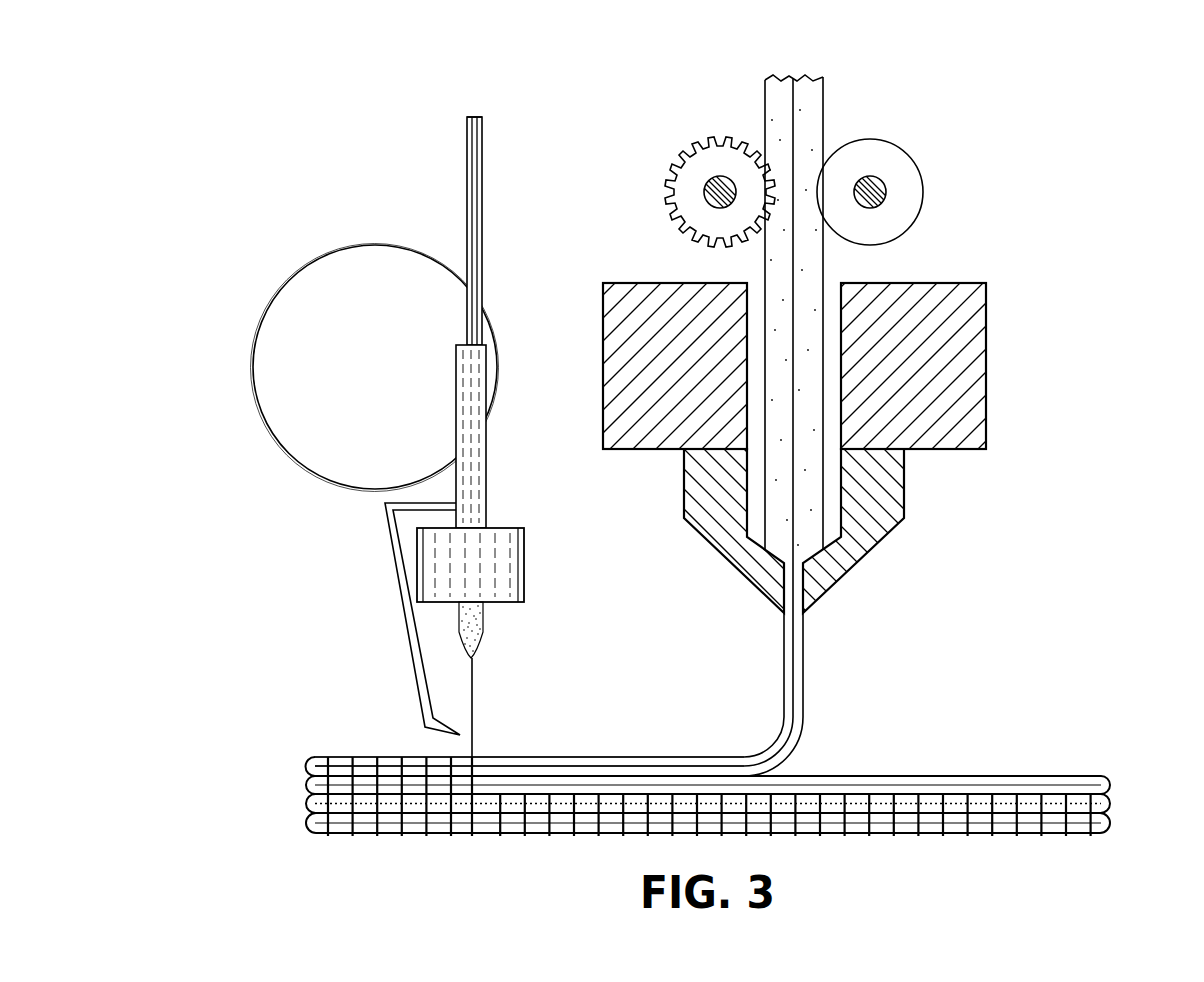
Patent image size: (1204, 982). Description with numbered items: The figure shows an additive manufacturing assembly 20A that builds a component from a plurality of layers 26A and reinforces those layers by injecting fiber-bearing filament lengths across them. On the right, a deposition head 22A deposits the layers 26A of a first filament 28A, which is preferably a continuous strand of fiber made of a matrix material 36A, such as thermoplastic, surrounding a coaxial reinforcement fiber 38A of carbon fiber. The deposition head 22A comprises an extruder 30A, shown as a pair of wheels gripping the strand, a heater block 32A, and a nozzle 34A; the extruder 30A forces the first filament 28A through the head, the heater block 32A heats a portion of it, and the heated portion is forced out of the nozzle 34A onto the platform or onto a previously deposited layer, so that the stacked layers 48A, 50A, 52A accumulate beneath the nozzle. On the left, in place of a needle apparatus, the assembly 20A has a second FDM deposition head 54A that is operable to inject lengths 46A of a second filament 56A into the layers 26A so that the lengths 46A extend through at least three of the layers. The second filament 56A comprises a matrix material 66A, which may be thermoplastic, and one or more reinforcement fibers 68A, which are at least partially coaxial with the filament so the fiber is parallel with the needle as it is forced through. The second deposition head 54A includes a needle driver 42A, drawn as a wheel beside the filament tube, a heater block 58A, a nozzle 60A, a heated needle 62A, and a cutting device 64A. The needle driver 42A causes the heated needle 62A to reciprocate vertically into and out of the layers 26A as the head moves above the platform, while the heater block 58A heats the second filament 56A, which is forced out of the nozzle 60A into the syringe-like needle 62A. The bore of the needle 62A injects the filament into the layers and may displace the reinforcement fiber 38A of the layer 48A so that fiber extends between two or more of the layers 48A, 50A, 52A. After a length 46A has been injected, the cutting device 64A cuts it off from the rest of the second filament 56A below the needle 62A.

The additive manufacturing assembly 20A is at (317, 98).
The deposition head 22A is at (998, 258).
The layers 26A is at (1123, 759).
The first filament 28A is at (830, 108).
The extruder 30A is at (907, 185).
The heater block 32A is at (978, 366).
The nozzle 34A is at (883, 515).
The matrix material 36A is at (765, 110).
The reinforcement fiber 38A is at (793, 80).
The needle driver 42A is at (348, 268).
The lengths of second filament 46A is at (400, 762).
The layer 48A is at (306, 766).
The layer 50A is at (306, 785).
The layer 52A is at (306, 805).
The second FDM deposition head 54A is at (258, 277).
The second filament 56A is at (483, 140).
The heater block 58A is at (524, 550).
The nozzle 60A is at (482, 623).
The heated needle 62A is at (472, 705).
The cutting device 64A is at (405, 622).
The matrix material 66A is at (483, 182).
The reinforcement fiber 68A is at (472, 117).